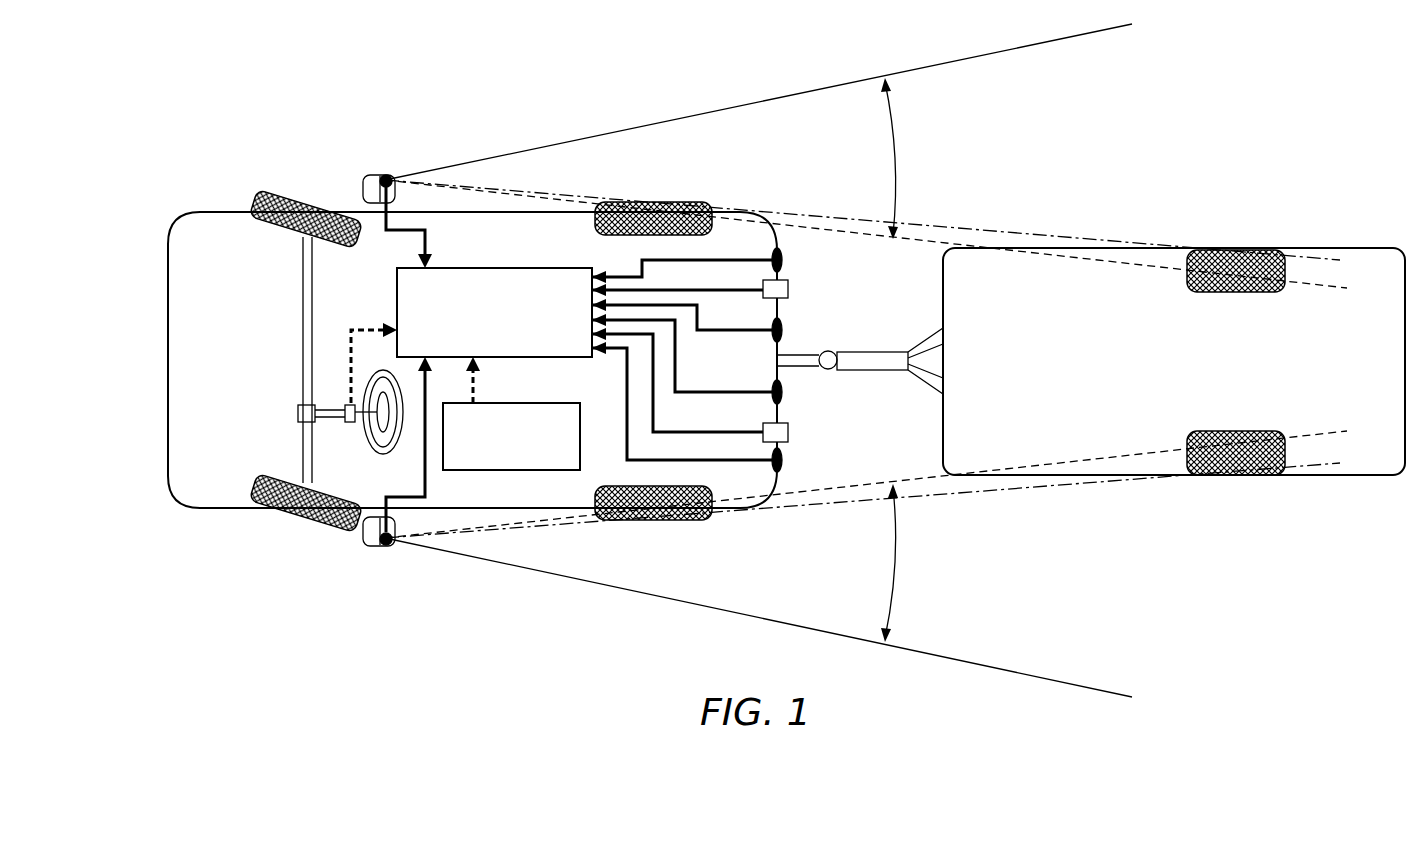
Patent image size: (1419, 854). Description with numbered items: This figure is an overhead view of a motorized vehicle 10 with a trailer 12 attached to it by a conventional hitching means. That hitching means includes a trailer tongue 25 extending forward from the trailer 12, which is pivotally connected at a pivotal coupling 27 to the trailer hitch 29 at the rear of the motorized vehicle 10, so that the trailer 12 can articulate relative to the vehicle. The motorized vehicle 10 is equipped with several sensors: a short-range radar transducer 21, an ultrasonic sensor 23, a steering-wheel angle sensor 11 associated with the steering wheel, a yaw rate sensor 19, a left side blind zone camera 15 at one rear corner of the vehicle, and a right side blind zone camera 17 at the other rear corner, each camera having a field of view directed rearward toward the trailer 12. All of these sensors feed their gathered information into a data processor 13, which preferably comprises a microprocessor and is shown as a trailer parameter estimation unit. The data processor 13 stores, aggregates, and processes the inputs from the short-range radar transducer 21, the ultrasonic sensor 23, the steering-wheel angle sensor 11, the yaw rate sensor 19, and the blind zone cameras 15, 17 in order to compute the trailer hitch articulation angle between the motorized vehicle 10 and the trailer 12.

The motorized vehicle 10 is at (208, 480).
The steering-wheel angle sensor 11 is at (347, 405).
The trailer 12 is at (1130, 308).
The data processor 13 is at (400, 280).
The left side blind zone camera 15 is at (383, 549).
The right side blind zone camera 17 is at (385, 176).
The yaw rate sensor 19 is at (471, 470).
The short-range radar transducer 21 is at (788, 434).
The ultrasonic sensor 23 is at (781, 258).
The trailer tongue 25 is at (884, 357).
The pivotal coupling 27 is at (828, 369).
The trailer hitch 29 is at (795, 365).